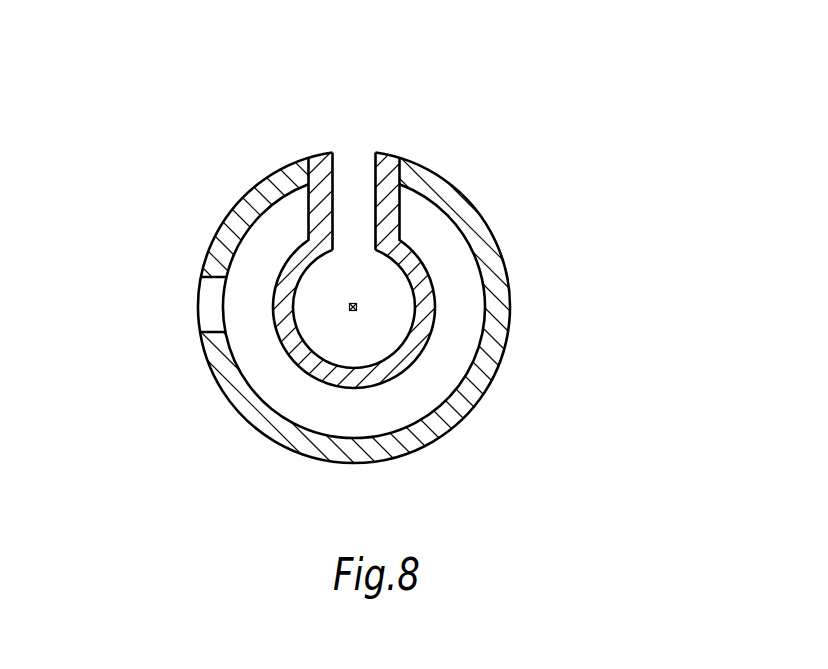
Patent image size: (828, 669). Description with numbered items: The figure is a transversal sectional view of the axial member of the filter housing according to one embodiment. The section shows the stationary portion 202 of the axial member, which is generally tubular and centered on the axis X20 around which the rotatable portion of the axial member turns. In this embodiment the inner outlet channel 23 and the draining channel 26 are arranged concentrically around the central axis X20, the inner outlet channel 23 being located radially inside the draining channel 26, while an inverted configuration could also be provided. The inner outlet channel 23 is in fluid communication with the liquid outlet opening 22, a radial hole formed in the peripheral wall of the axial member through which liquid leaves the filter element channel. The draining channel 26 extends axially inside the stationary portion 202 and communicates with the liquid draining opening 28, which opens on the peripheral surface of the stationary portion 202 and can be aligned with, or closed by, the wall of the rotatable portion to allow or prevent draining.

The liquid outlet opening 22 is at (359, 166).
The inner outlet channel 23 is at (383, 302).
The stationary portion 202 is at (497, 298).
The liquid draining opening 28 is at (200, 313).
The axis X20 is at (353, 315).
The draining channel 26 is at (435, 370).